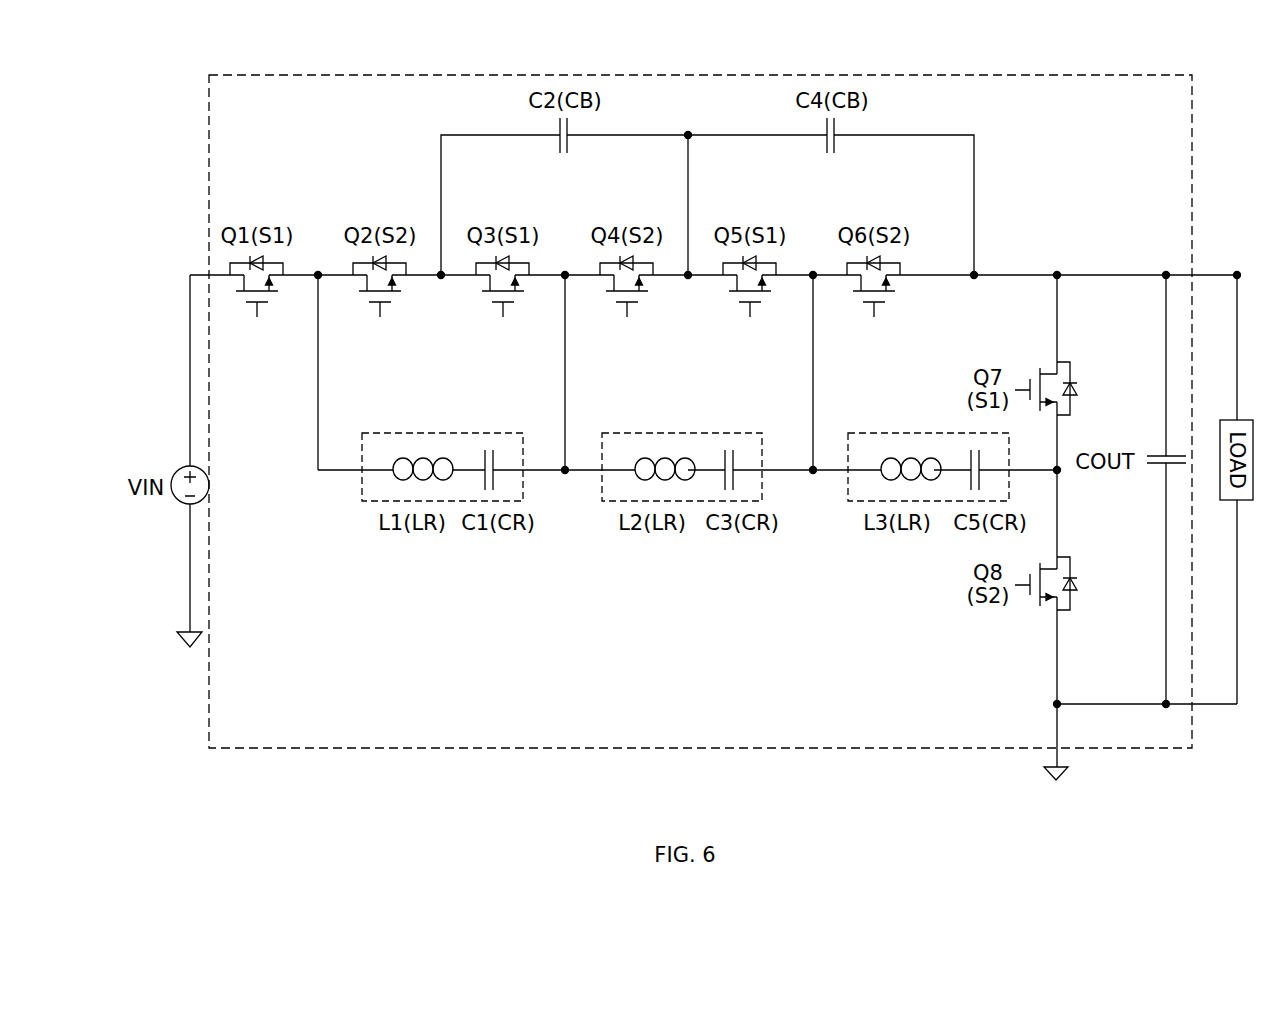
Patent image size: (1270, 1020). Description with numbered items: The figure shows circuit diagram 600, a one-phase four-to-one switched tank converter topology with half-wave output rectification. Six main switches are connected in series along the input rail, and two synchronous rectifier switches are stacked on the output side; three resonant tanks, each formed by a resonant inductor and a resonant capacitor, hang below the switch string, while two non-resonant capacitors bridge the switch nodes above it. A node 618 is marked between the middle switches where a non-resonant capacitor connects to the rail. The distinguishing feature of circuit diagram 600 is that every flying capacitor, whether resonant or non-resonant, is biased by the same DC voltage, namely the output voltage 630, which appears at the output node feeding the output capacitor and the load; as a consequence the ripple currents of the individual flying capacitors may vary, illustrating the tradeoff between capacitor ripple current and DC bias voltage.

The circuit diagram 600 is at (238, 75).
The intermediate switching node 618 is at (688, 278).
The VOUT 630 is at (1235, 230).